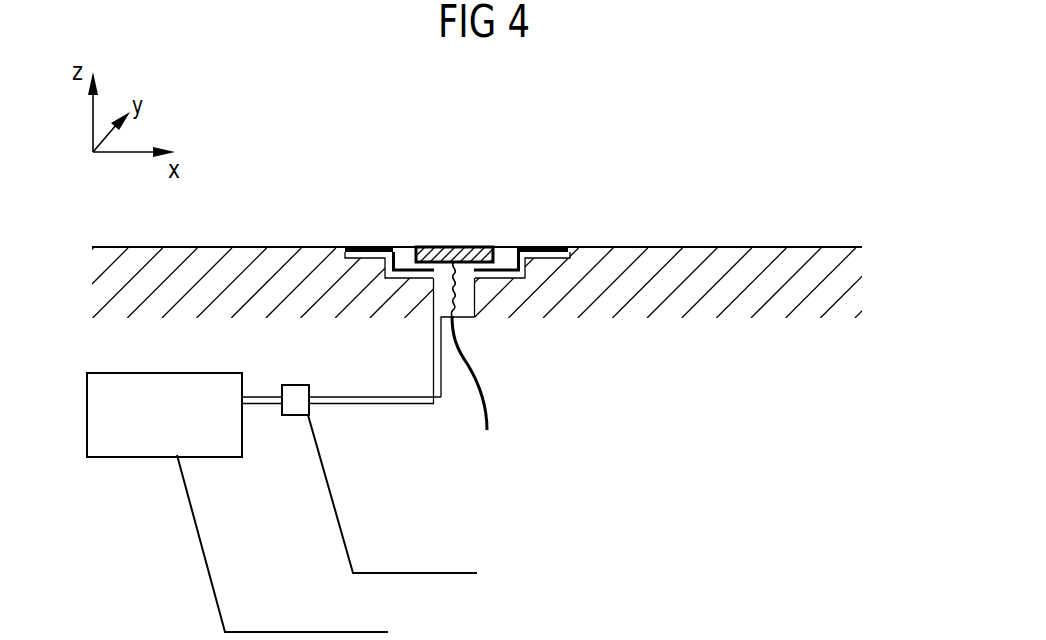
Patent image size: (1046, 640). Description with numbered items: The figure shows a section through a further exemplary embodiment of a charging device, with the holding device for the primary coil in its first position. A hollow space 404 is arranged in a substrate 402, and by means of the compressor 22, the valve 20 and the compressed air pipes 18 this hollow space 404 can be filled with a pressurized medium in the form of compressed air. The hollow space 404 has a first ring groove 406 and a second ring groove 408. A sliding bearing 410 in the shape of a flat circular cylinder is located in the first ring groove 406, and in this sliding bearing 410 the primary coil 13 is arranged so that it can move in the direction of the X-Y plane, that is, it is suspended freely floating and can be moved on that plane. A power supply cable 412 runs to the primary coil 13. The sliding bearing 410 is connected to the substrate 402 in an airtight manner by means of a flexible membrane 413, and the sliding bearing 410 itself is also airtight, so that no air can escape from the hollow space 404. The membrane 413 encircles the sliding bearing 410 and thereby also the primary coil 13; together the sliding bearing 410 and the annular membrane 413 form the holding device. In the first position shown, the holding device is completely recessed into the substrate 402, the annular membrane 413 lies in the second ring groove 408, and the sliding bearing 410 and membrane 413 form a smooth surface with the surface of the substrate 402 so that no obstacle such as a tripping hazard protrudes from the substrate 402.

The primary coil 13 is at (452, 253).
The compressed air pipes 18 is at (353, 405).
The valve 20 is at (295, 417).
The compressor 22 is at (163, 458).
The substrate 402 is at (763, 248).
The hollow space 404 is at (467, 302).
The first ring groove 406 is at (513, 282).
The second ring groove 408 is at (562, 268).
The sliding bearing 410 is at (403, 257).
The power supply cable 412 is at (487, 420).
The membrane 413 is at (355, 246).